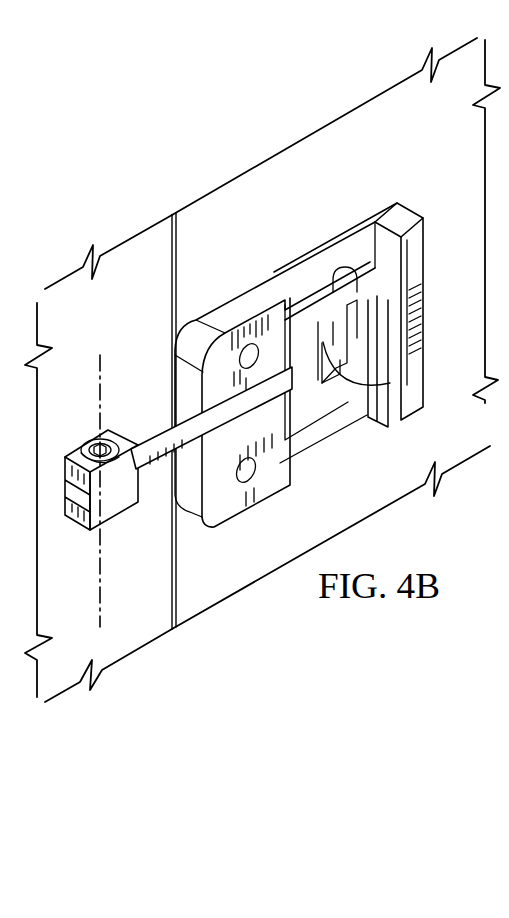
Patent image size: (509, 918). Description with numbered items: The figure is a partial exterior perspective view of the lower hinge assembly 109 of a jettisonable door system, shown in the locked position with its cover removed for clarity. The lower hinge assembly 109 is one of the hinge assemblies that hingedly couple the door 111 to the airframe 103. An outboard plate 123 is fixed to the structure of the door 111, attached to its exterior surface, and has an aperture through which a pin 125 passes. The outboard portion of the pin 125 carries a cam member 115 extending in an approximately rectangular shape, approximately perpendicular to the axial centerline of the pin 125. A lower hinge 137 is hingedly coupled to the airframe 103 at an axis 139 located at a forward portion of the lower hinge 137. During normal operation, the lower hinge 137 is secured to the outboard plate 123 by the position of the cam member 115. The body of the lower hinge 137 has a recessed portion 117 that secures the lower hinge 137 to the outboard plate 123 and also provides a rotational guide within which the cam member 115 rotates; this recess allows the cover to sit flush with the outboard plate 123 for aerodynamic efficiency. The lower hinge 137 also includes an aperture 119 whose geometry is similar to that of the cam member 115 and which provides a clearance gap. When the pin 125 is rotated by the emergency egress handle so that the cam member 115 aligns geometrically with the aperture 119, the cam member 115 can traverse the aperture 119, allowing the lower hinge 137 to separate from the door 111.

The airframe 103 is at (137, 627).
The lower hinge assembly 109 is at (158, 334).
The door 111 is at (216, 587).
The cam member 115 is at (366, 310).
The recessed portion 117 is at (388, 372).
The aperture 119 is at (405, 327).
The outboard plate 123 is at (404, 212).
The pin 125 is at (325, 340).
The lower hinge 137 is at (166, 478).
The axis 139 is at (100, 613).